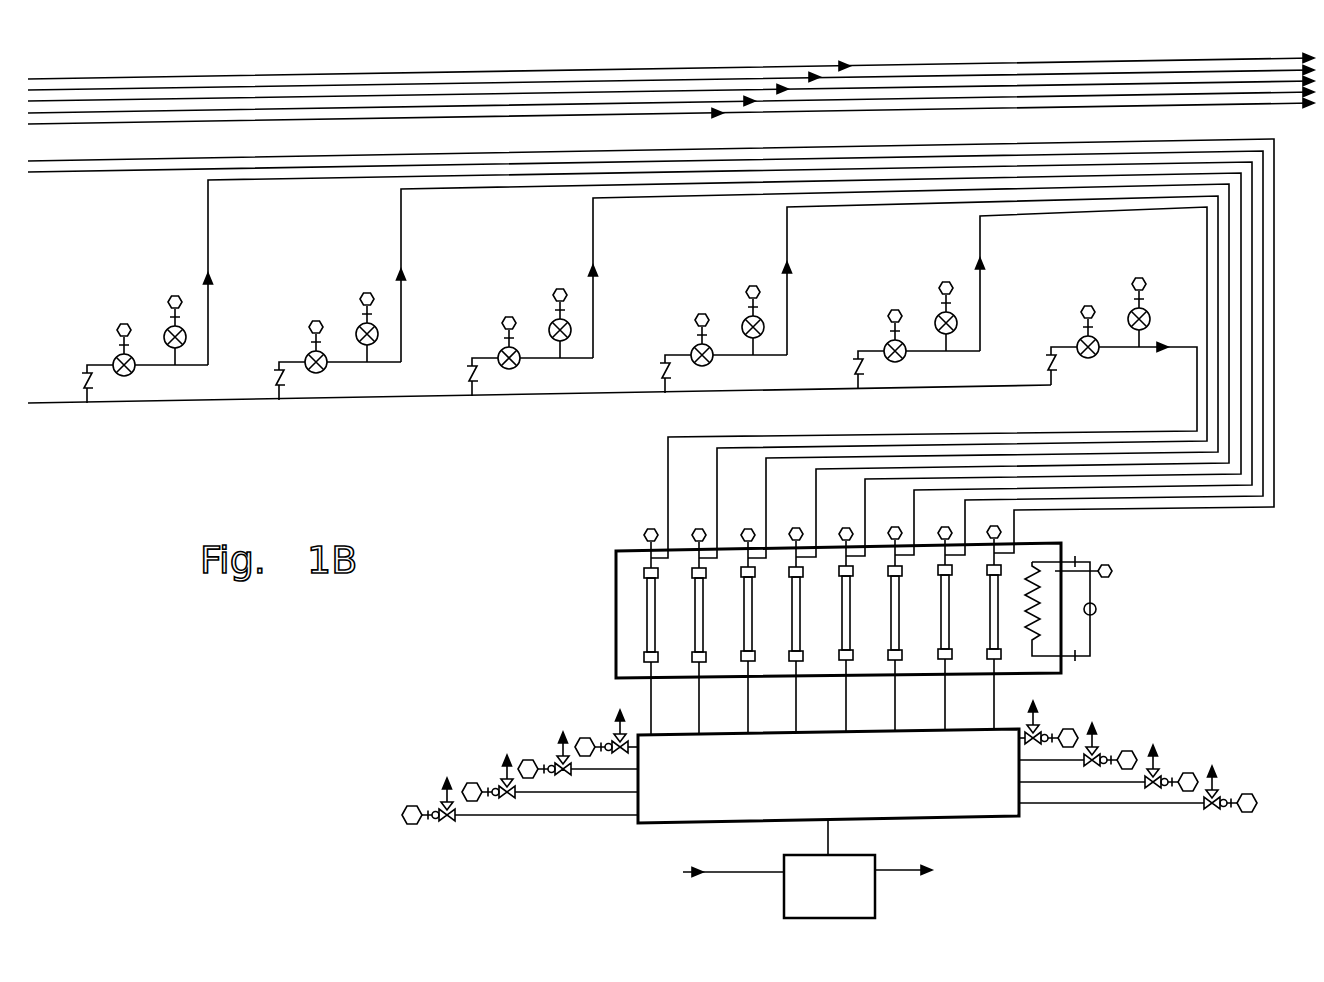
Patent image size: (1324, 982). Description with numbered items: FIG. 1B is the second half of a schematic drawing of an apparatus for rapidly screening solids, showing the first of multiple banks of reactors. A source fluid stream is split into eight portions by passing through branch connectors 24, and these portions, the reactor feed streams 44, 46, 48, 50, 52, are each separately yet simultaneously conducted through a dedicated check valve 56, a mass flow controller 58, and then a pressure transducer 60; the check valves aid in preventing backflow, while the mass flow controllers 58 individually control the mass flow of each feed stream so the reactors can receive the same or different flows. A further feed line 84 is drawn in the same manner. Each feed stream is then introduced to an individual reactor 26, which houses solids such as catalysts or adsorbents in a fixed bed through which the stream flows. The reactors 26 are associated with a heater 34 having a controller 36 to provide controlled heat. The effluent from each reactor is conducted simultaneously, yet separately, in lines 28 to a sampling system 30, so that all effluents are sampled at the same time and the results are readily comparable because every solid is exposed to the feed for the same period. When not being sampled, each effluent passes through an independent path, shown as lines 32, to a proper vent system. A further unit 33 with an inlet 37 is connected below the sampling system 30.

The check valve 24 is at (557, 412).
The reactor 26 is at (655, 630).
The lines 28 is at (656, 723).
The sampling system 30 is at (960, 820).
The lines 32 is at (629, 745).
The detector 33 is at (793, 897).
The heater 34 is at (1063, 673).
The controller 36 is at (1097, 609).
The carrier gas inlet 37 is at (727, 875).
The reactor feed stream 44 is at (208, 247).
The reactor feed stream 46 is at (401, 244).
The reactor feed stream 48 is at (593, 240).
The reactor feed stream 50 is at (787, 237).
The reactor feed stream 52 is at (980, 233).
The check valve 56 is at (590, 376).
The mass flow controller 58 is at (585, 341).
The pressure transducer 60 is at (637, 319).
The sample line 84 is at (1179, 346).